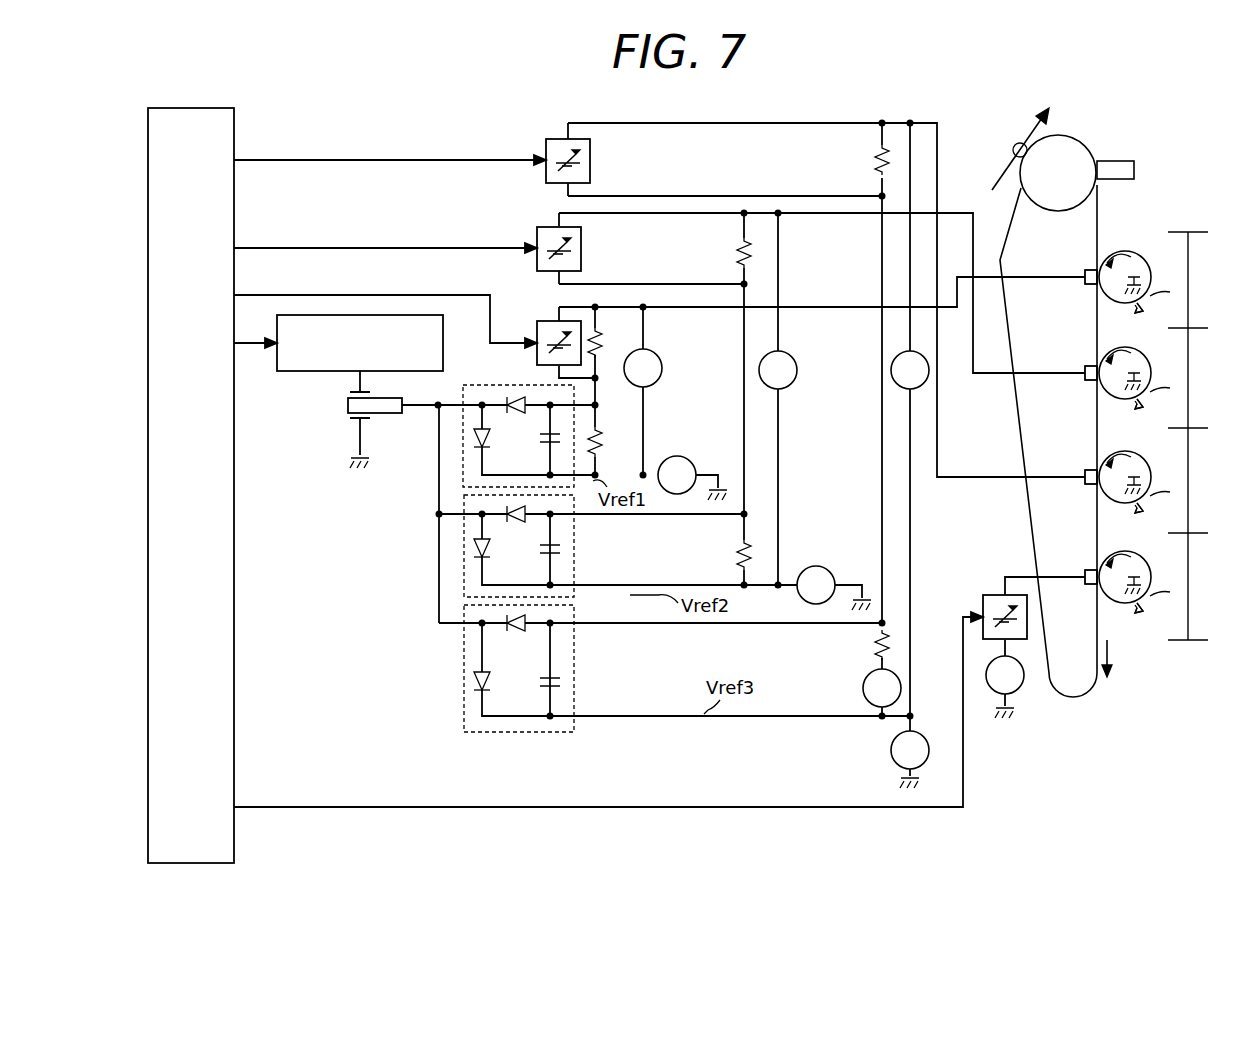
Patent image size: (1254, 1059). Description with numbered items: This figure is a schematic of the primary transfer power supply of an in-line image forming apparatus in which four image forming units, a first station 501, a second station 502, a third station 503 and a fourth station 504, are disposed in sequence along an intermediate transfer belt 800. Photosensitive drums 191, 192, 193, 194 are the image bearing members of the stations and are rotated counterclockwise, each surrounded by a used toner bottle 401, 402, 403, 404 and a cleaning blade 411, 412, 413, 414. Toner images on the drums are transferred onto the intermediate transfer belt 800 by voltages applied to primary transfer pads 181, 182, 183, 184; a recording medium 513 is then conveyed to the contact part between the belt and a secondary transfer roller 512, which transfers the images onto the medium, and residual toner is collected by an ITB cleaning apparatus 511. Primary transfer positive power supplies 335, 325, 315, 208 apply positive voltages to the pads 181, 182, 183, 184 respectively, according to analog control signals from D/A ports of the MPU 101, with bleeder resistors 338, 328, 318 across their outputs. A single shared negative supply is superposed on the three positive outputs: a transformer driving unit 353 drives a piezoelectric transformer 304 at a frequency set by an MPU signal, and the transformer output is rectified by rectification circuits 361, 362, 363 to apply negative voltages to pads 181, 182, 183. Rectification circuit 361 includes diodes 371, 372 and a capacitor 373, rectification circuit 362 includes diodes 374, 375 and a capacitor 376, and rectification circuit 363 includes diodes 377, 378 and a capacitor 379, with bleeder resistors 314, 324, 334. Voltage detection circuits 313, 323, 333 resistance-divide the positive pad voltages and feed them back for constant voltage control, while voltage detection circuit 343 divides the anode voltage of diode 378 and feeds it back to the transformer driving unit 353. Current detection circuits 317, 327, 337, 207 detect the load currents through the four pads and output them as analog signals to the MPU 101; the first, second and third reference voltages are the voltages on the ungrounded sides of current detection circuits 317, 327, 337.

The MPU 101 is at (148, 474).
The transformer driving unit 353 is at (305, 371).
The piezoelectric transformer 304 is at (346, 410).
The primary transfer positive power supply 315 is at (562, 139).
The resistor 318 is at (876, 160).
The primary transfer positive power supply 325 is at (583, 249).
The resistor 328 is at (740, 248).
The primary transfer positive power supply 335 is at (547, 321).
The resistor 338 is at (602, 340).
The resistor 314 is at (602, 430).
The voltage detection circuit 313 is at (664, 368).
The current detection circuit 317 is at (683, 458).
The voltage detection circuit 323 is at (794, 354).
The resistor 324 is at (742, 554).
The current detection circuit 327 is at (823, 567).
The voltage detection circuit 333 is at (891, 370).
The resistor 334 is at (882, 644).
The voltage detection circuit 343 is at (863, 688).
The current detection circuit 337 is at (891, 750).
The rectification circuit 361 is at (489, 423).
The diode 371 is at (464, 439).
The diode 372 is at (514, 397).
The capacitor 373 is at (526, 452).
The rectification circuit 362 is at (590, 546).
The diode 374 is at (464, 550).
The diode 375 is at (518, 524).
The capacitor 376 is at (560, 554).
The rectification circuit 363 is at (657, 668).
The diode 377 is at (474, 681).
The diode 378 is at (518, 632).
The capacitor 379 is at (560, 686).
The primary transfer positive power supply 208 is at (996, 595).
The current detection circuit 207 is at (1020, 692).
The ITB cleaning apparatus 511 is at (1120, 160).
The secondary transfer roller 512 is at (1012, 148).
The recording medium 513 is at (1042, 126).
The intermediate transfer belt 800 is at (1090, 690).
The photosensitive drum 191 is at (1110, 258).
The photosensitive drum 192 is at (1110, 354).
The photosensitive drum 193 is at (1110, 460).
The photosensitive drum 194 is at (1110, 560).
The primary transfer pad 181 is at (1092, 285).
The primary transfer pad 182 is at (1092, 381).
The primary transfer pad 183 is at (1092, 485).
The primary transfer pad 184 is at (1092, 585).
The used toner bottle 401 is at (1138, 306).
The used toner bottle 402 is at (1138, 410).
The used toner bottle 403 is at (1138, 514).
The used toner bottle 404 is at (1138, 618).
The cleaning blade 411 is at (1170, 292).
The cleaning blade 412 is at (1170, 388).
The cleaning blade 413 is at (1170, 492).
The cleaning blade 414 is at (1170, 592).
The first station 501 is at (1188, 270).
The second station 502 is at (1188, 366).
The third station 503 is at (1188, 472).
The fourth station 504 is at (1188, 574).